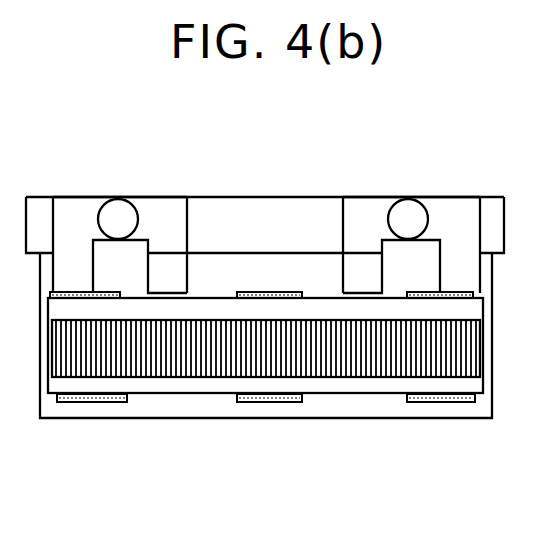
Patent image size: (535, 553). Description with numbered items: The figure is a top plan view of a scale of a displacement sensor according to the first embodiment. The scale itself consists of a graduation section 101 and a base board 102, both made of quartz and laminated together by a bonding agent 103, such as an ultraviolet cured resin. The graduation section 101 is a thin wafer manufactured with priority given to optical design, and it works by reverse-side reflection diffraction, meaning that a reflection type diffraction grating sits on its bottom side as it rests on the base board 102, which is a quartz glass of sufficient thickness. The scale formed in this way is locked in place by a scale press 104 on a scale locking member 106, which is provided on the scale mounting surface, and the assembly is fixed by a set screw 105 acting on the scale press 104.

The graduation section 101 is at (153, 385).
The base board 102 is at (97, 413).
The bonding agent 103 is at (435, 402).
The scale press 104 is at (87, 197).
The set screw 105 is at (123, 210).
The scale locking member 106 is at (262, 197).